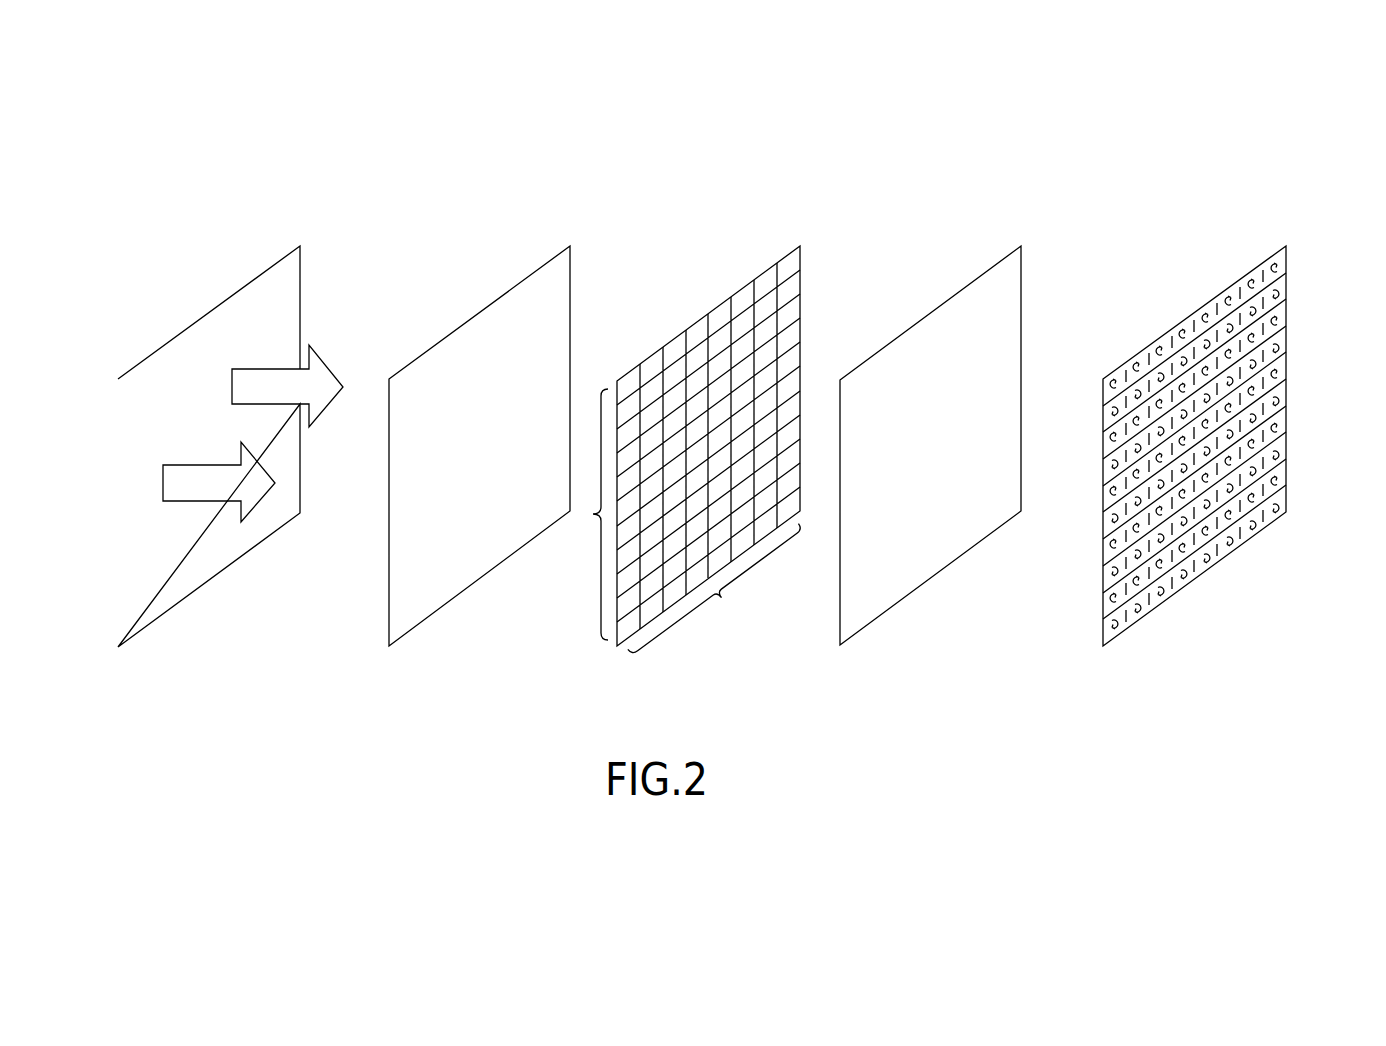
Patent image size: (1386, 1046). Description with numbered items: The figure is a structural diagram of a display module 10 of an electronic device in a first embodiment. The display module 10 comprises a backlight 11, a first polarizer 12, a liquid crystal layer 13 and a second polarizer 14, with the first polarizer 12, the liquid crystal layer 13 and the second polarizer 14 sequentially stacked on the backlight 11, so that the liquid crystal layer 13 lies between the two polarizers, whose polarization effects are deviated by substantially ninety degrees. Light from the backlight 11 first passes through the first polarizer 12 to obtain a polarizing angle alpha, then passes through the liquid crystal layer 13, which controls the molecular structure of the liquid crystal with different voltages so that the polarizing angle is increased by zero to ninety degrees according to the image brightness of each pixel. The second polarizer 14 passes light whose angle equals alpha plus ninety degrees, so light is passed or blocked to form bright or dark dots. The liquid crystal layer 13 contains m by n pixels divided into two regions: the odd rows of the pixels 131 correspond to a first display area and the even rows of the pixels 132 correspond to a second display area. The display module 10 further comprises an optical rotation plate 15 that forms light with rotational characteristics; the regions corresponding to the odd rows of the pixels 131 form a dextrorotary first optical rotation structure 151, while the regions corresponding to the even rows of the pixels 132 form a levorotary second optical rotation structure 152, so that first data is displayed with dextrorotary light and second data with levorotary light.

The display module 10 is at (1221, 126).
The backlight 11 is at (234, 291).
The first polarizer 12 is at (514, 302).
The liquid crystal layer 13 is at (740, 296).
The odd rows of the pixels 131 is at (803, 251).
The even rows of the pixels 132 is at (802, 279).
The second polarizer 14 is at (963, 294).
The optical rotation plate 15 is at (1198, 308).
The first optical rotation structure 151 is at (1291, 248).
The second optical rotation structure 152 is at (1291, 279).